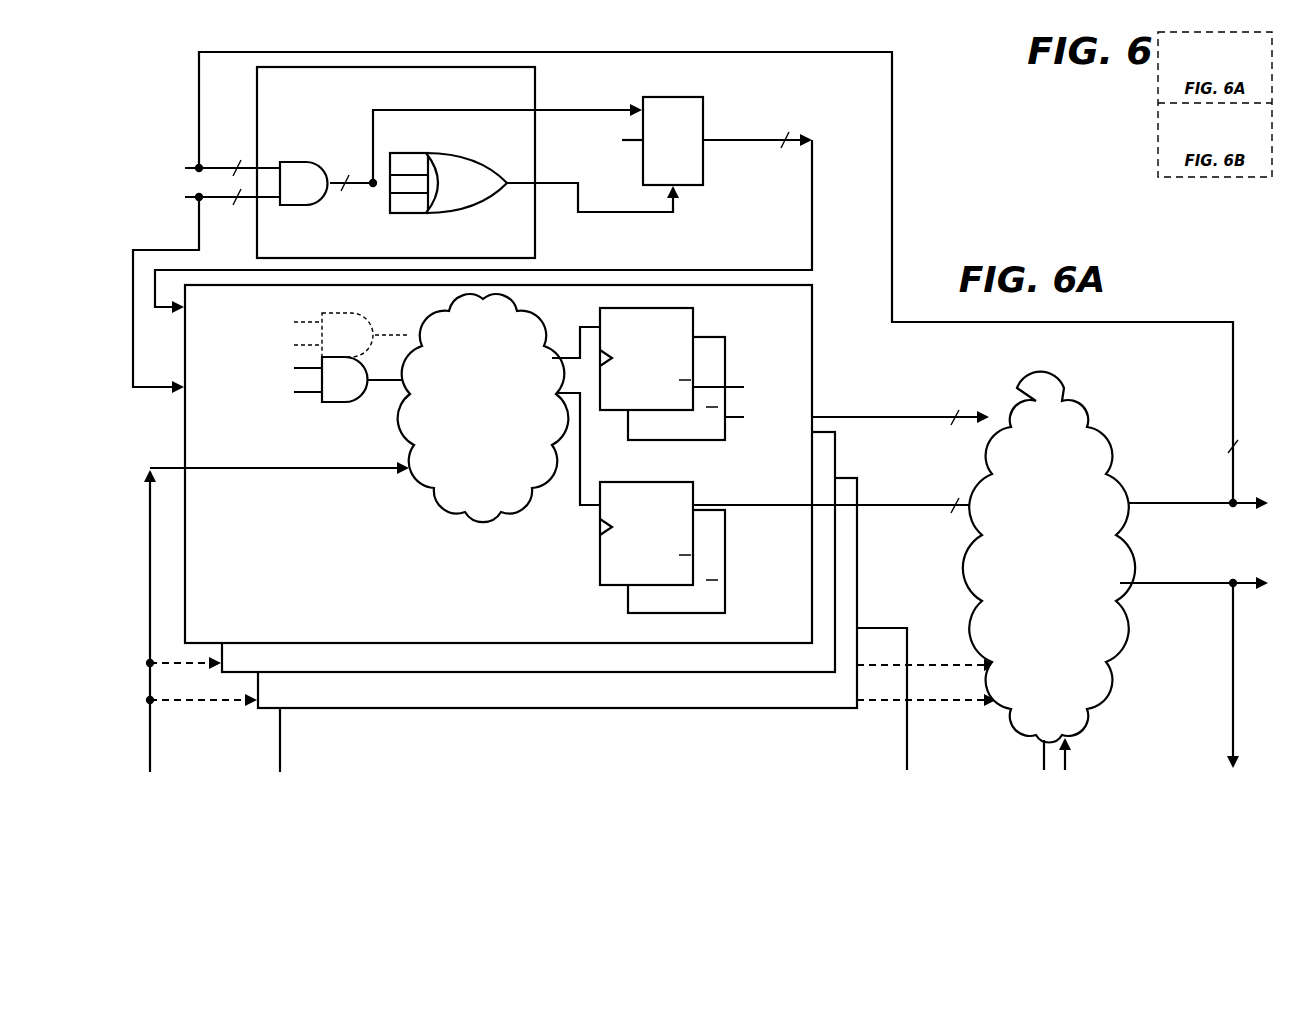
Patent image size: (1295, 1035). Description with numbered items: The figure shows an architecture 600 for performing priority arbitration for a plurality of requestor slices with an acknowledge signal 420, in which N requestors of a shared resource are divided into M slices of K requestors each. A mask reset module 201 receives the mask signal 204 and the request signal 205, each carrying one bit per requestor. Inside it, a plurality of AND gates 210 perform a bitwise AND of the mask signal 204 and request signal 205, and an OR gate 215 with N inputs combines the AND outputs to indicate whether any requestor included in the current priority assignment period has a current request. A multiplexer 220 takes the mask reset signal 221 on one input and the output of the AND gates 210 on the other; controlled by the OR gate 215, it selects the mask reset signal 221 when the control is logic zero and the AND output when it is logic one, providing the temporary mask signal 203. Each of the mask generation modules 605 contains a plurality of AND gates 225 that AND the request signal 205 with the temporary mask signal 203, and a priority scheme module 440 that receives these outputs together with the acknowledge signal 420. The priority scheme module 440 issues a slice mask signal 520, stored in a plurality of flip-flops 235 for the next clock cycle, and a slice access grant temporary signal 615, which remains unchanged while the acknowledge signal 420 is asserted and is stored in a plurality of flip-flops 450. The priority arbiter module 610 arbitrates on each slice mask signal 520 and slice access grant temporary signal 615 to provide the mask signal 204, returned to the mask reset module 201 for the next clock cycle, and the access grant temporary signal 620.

The architecture 600 is at (928, 238).
The mask signal 204 is at (197, 118).
The request signal 205 is at (197, 240).
The mask reset module 201 is at (536, 69).
The plurality of AND gates 210 is at (288, 166).
The OR gate 215 is at (450, 150).
The multiplexer 220 is at (704, 187).
The mask reset signal 221 is at (632, 145).
The temporary mask signal 203 is at (812, 205).
The mask generation modules 605 is at (812, 318).
The plurality of AND gates 225 is at (341, 404).
The acknowledge signal 420 is at (180, 466).
The priority scheme module 440 is at (463, 524).
The plurality of flip-flops 235 is at (600, 313).
The plurality of flip-flops 450 is at (600, 568).
The slice mask signal 520 is at (918, 420).
The slice access grant temporary signal 615 is at (918, 508).
The priority arbiter module 610 is at (1062, 370).
The access grant temporary signal 620 is at (1196, 588).